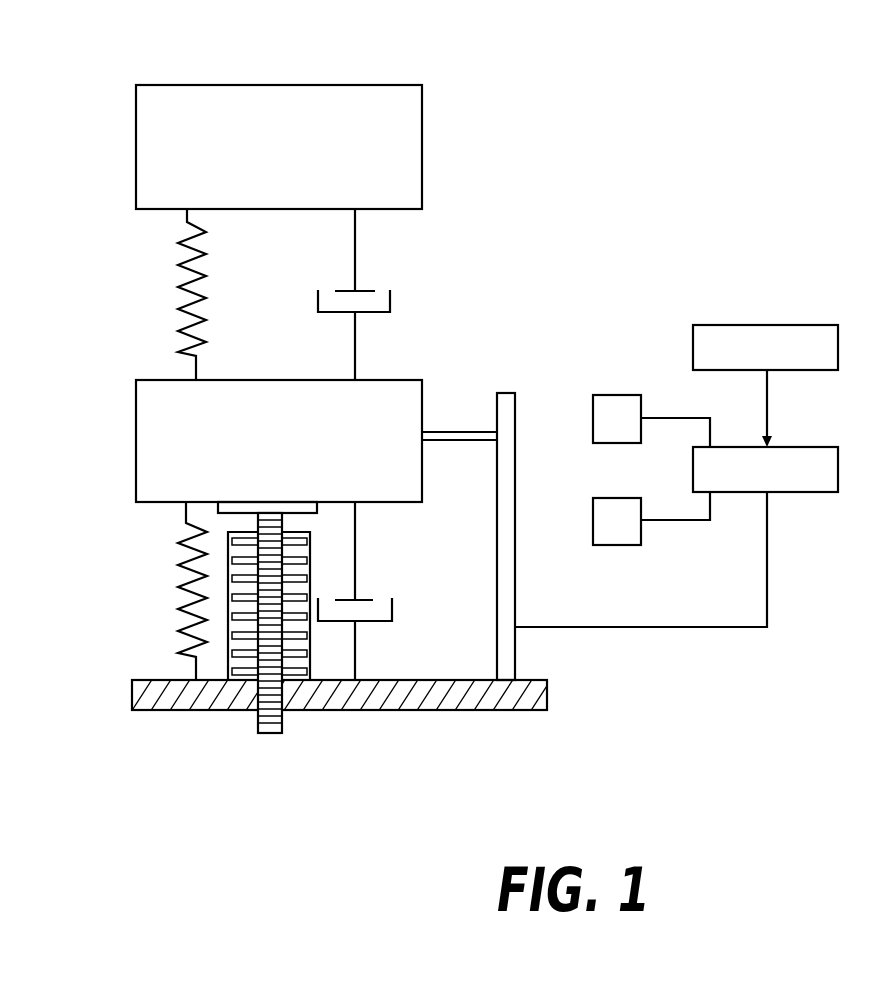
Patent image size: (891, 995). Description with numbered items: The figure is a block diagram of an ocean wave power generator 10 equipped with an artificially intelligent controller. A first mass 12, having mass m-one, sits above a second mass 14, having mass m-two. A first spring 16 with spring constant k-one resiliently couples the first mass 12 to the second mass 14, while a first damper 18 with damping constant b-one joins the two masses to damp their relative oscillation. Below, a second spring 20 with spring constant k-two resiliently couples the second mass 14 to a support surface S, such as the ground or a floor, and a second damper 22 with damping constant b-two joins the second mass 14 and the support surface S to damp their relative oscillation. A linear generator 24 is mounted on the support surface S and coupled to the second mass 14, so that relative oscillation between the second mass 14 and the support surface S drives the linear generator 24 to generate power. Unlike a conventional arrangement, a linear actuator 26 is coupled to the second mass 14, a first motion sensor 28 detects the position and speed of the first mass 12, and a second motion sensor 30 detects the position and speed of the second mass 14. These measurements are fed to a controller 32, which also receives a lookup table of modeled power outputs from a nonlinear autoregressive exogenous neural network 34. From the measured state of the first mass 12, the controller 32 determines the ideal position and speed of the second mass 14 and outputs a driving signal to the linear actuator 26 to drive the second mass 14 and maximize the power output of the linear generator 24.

The ocean wave power generator 10 is at (456, 65).
The first mass 12 is at (356, 85).
The second mass 14 is at (405, 378).
The first spring 16 is at (182, 310).
The first damper 18 is at (358, 290).
The second spring 20 is at (182, 608).
The second damper 22 is at (357, 553).
The linear generator 24 is at (293, 657).
The linear actuator 26 is at (517, 508).
The first motion sensor 28 is at (615, 395).
The second motion sensor 30 is at (615, 547).
The controller 32 is at (825, 493).
The nonlinear autoregressive exogenous neural network (NARX-NN) 34 is at (823, 325).
The support surface S is at (382, 712).